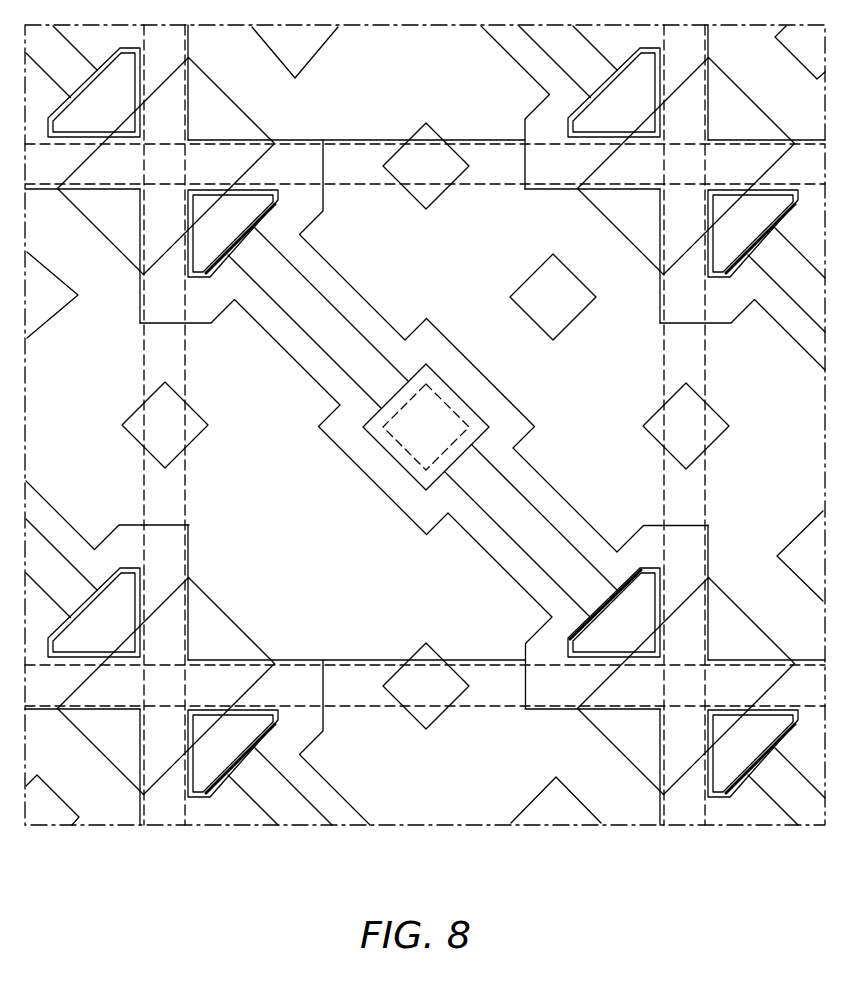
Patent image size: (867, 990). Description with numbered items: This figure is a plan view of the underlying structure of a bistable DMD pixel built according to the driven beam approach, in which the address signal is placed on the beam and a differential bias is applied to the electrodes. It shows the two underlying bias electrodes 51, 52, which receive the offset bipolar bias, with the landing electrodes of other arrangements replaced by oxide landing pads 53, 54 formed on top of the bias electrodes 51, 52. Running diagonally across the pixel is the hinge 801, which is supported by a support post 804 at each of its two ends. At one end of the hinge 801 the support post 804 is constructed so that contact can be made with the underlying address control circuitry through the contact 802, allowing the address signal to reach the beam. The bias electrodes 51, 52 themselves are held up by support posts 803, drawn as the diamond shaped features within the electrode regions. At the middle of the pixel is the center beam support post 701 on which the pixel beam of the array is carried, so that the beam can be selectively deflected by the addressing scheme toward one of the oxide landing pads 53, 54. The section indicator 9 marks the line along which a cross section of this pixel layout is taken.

The bias electrode 51 is at (65, 519).
The bias electrode 52 is at (513, 59).
The oxide landing pad 53 is at (230, 619).
The oxide landing pad 54 is at (636, 245).
The center beam support post 701 is at (445, 440).
The hinge 801 is at (318, 290).
The contact 802 is at (236, 246).
The support post 803 is at (536, 309).
The support post 804 is at (660, 626).
The section line 9- 9 is at (783, 84).